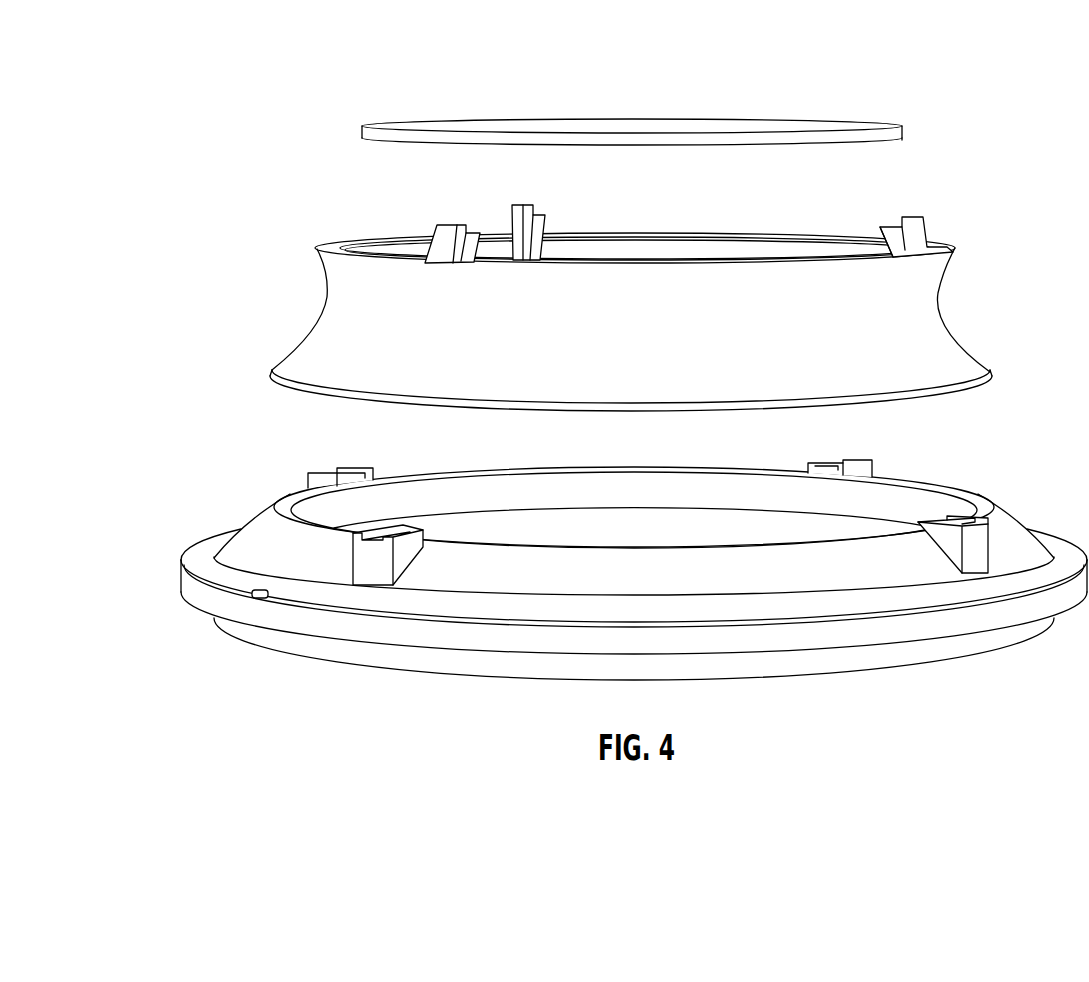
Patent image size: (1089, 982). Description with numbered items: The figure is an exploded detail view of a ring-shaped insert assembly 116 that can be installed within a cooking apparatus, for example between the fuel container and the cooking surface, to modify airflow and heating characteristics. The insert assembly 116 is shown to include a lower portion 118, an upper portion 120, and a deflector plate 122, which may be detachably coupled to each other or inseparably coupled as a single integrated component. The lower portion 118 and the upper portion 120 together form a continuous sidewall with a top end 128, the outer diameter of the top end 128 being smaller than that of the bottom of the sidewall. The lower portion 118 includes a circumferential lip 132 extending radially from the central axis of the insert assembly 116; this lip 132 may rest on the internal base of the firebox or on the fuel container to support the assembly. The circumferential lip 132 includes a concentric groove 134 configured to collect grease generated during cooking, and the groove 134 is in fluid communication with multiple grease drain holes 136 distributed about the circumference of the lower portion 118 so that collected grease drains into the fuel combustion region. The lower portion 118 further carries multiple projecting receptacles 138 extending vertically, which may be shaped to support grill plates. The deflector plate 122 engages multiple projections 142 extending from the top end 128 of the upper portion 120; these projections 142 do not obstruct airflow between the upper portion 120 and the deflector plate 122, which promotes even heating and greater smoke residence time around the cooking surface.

The insert assembly 116 is at (258, 133).
The lower portion 118 is at (241, 537).
The upper portion 120 is at (960, 352).
The deflector plate 122 is at (737, 133).
The top end 128 is at (978, 220).
The circumferential lip 132 is at (203, 604).
The groove 134 is at (205, 565).
The grease drain holes 136 is at (263, 598).
The projecting receptacles 138 is at (378, 565).
The projections 142 is at (436, 228).